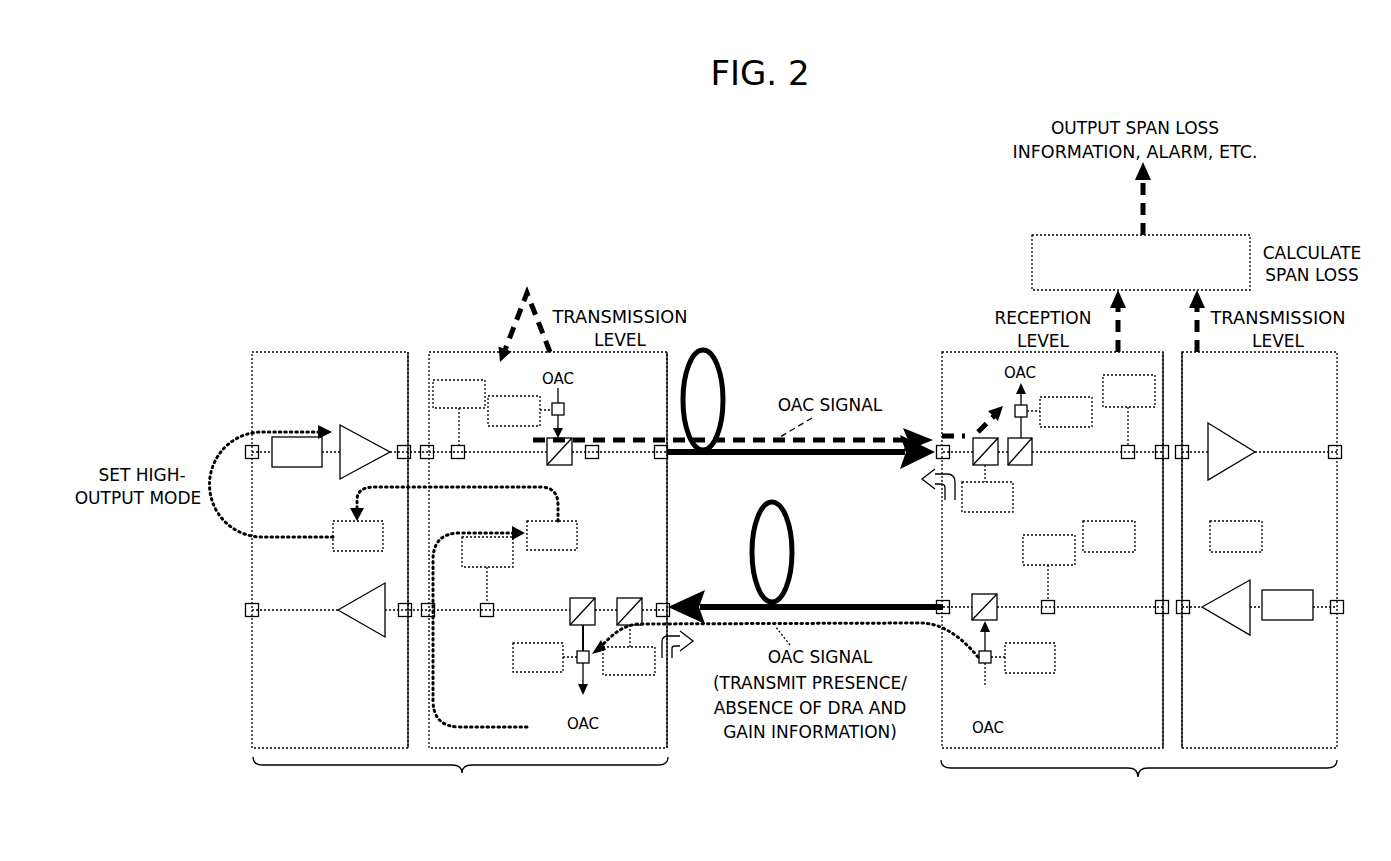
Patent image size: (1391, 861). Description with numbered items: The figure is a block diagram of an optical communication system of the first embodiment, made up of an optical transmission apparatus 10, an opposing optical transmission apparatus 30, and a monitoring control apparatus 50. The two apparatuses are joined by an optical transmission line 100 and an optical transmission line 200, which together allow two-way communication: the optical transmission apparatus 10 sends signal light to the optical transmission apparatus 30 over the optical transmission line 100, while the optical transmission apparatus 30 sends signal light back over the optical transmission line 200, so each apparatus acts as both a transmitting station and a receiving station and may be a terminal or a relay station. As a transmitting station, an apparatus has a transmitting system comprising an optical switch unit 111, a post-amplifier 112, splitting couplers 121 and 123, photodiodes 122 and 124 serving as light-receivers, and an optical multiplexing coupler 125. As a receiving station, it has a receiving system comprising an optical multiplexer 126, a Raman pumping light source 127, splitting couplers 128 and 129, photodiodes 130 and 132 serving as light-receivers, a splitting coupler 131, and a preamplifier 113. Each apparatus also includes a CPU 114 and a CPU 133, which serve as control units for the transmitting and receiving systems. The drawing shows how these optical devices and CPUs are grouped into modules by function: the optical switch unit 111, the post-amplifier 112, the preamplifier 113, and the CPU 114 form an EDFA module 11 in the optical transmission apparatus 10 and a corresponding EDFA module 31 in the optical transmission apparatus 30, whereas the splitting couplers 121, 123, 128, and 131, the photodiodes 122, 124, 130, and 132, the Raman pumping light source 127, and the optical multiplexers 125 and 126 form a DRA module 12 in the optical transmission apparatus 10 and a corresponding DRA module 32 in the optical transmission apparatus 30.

The optical transmission apparatus 10 is at (460, 780).
The EDFA module 11 is at (310, 352).
The DRA module 12 is at (667, 370).
The optical transmission apparatus 30 is at (1139, 784).
The EDFA module 31 is at (1337, 370).
The DRA module 32 is at (945, 352).
The monitoring control apparatus 50 is at (1172, 235).
The optical transmission line 100 is at (830, 458).
The optical transmission line 200 is at (828, 605).
The optical switch unit 111 is at (296, 468).
The optical amplifier (post-amplifier) 112 is at (362, 440).
The optical amplifier (preamplifier) 113 is at (362, 620).
The CPU 114 is at (340, 551).
The optical coupler (splitting coupler) 121 is at (462, 458).
The photodiode (PD) 122 is at (460, 380).
The optical coupler (splitting coupler) 123 is at (564, 409).
The photodiode (PD) 124 is at (503, 396).
The optical coupler (optical multiplexer) 125 is at (560, 466).
The optical coupler (optical multiplexer) 126 is at (630, 598).
The Raman pumping light source (LD) 127 is at (630, 675).
The optical coupler (splitting coupler) 128 is at (575, 598).
The optical coupler (splitting coupler) 129 is at (576, 655).
The photodiode (PD) 130 is at (537, 672).
The optical coupler (splitting coupler) 131 is at (487, 617).
The photodiode (PD) 132 is at (475, 567).
The CPU 133 is at (578, 533).